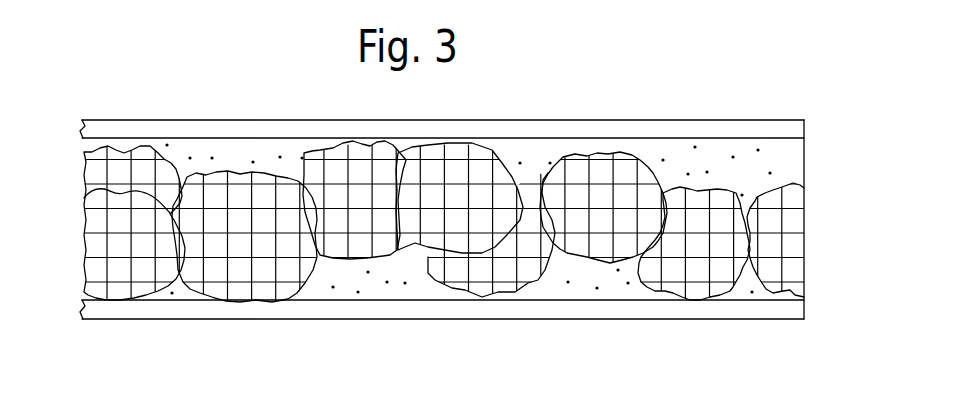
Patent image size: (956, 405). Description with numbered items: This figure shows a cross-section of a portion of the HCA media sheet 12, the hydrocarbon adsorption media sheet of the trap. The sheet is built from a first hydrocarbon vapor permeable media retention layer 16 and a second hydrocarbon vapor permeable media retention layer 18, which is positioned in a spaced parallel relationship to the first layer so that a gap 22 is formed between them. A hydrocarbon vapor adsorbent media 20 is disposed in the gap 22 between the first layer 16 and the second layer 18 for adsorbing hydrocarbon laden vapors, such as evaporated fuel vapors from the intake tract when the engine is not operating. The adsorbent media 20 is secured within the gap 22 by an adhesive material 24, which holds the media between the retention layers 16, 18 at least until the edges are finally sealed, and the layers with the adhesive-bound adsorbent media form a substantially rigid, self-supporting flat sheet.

The HCA media sheet 12 is at (698, 103).
The first hydrocarbon vapor permeable media retention layer 16 is at (795, 131).
The second hydrocarbon vapor permeable media retention layer 18 is at (788, 320).
The hydrocarbon vapor adsorbent media 20 is at (257, 262).
The gap 22 is at (820, 140).
The adhesive material 24 is at (243, 149).